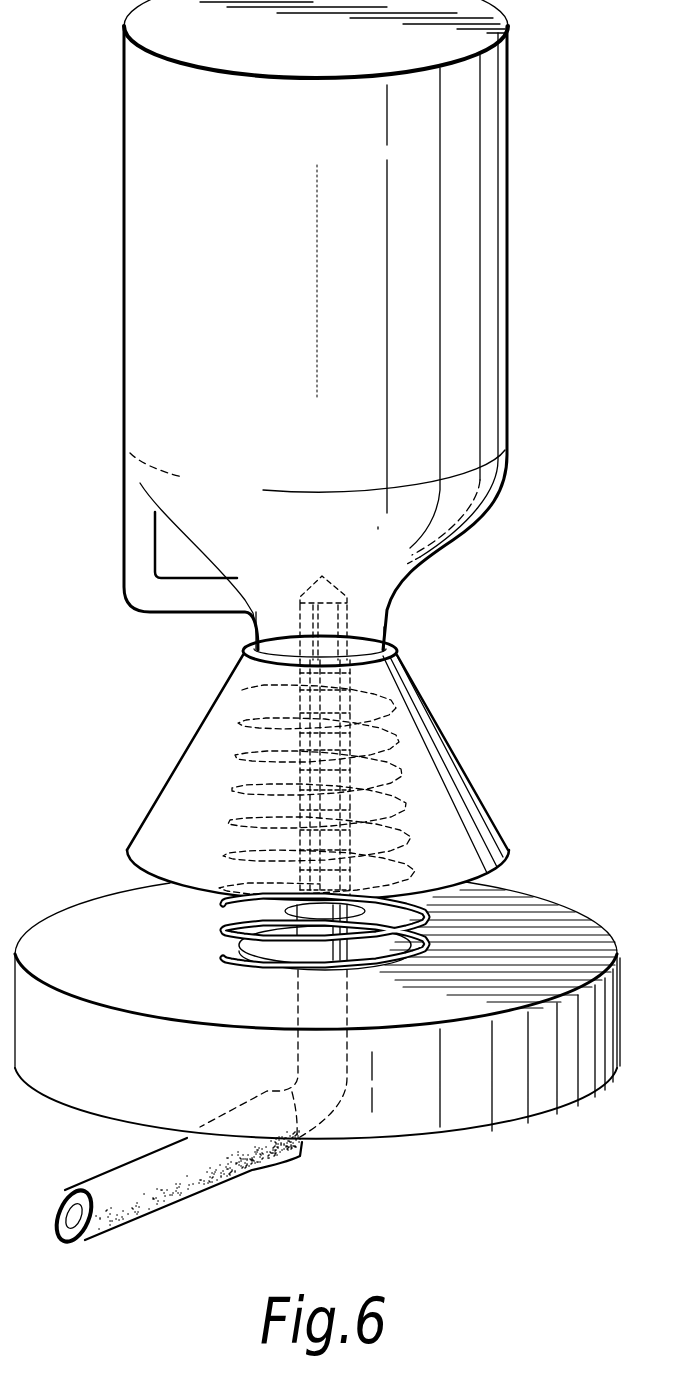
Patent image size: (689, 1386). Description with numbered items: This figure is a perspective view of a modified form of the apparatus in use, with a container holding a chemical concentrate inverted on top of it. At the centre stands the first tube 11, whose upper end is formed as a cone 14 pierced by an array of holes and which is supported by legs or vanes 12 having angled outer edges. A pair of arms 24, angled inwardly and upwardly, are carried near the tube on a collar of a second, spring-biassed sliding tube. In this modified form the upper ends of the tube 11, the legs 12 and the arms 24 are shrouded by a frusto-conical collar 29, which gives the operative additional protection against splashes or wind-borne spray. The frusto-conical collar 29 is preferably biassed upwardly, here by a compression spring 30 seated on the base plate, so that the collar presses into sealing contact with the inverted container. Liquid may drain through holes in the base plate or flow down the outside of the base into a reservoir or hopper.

The first tube 11 is at (350, 613).
The legs or vanes 12 is at (383, 767).
The cone 14 is at (313, 590).
The arms 24 is at (233, 773).
The frusto-conical collar 29 is at (410, 723).
The compression spring 30 is at (225, 930).